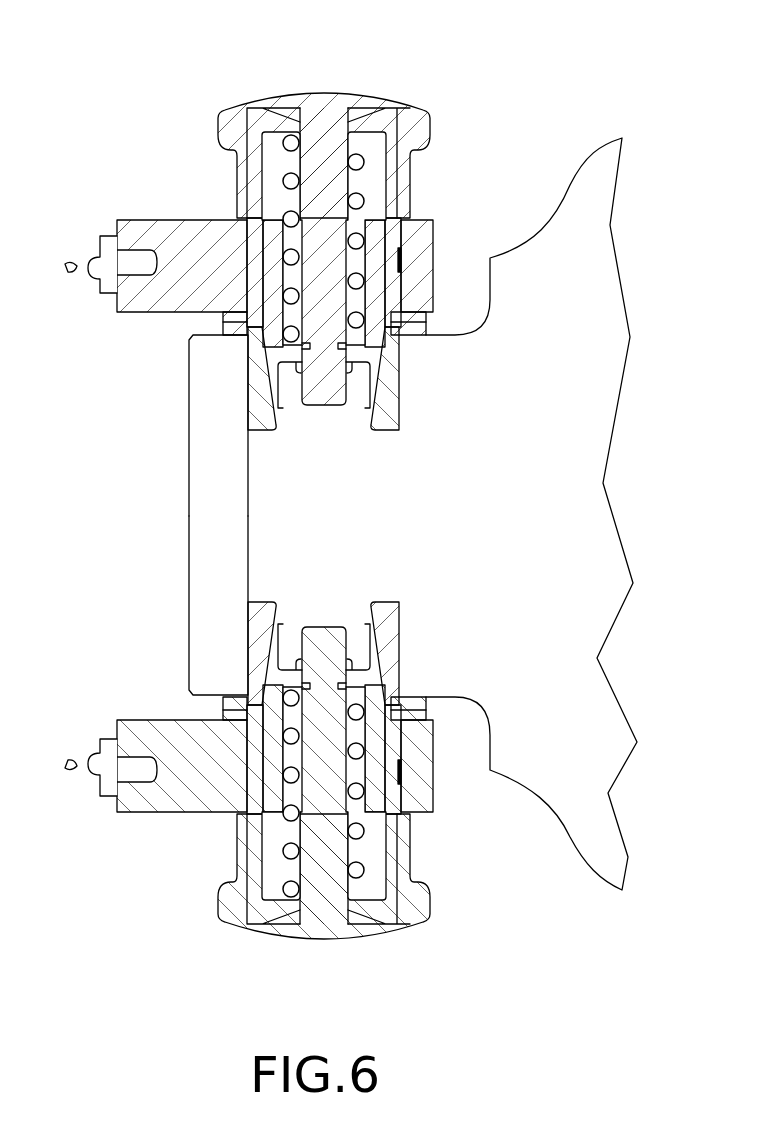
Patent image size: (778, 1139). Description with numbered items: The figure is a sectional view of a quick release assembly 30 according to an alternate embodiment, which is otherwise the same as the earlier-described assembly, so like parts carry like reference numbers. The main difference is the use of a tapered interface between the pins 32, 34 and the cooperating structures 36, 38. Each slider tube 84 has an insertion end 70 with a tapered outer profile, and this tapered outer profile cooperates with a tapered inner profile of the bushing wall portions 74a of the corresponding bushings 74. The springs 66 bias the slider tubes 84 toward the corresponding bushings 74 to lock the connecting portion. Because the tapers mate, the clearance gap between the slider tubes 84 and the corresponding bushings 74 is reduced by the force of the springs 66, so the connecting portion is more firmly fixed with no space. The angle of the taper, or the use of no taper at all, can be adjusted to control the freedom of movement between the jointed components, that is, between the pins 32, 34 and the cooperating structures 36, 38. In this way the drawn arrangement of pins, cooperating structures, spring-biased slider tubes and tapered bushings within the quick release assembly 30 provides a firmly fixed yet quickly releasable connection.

The quick release assembly 30 is at (490, 900).
The pin 32 is at (327, 100).
The pin 34 is at (324, 907).
The cooperating structure 36 is at (232, 641).
The cooperating structure 38 is at (232, 391).
The spring 66 is at (360, 200).
The insertion end 70 is at (277, 385).
The bushing 74 is at (394, 326).
The bushing wall portion 74a is at (394, 402).
The slider tube 84 is at (382, 285).